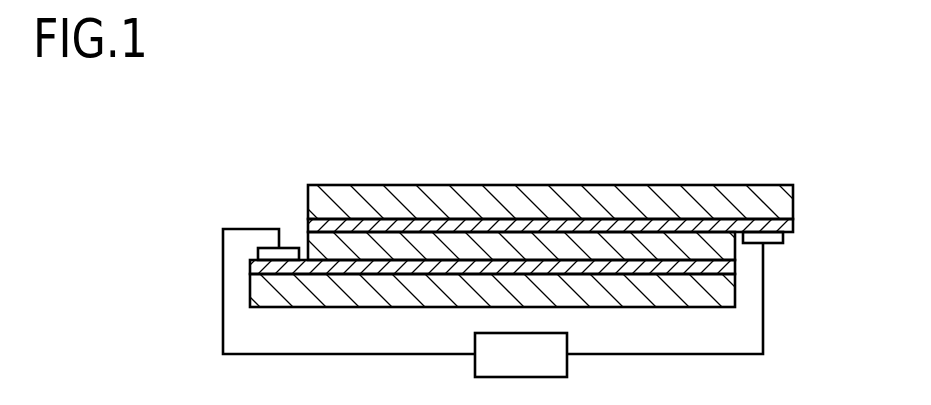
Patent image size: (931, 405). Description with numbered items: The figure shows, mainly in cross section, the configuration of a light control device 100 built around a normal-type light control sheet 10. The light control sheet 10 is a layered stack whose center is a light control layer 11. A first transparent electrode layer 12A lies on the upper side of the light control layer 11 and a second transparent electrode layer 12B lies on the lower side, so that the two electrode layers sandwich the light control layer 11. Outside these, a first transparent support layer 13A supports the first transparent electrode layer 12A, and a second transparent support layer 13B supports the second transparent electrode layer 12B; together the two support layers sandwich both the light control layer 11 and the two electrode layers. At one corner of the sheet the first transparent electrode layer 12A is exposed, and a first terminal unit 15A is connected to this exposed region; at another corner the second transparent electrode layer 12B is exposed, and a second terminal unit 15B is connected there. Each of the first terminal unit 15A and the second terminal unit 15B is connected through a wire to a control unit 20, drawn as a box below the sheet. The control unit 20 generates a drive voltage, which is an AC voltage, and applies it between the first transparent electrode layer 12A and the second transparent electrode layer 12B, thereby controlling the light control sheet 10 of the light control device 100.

The light control device 100 is at (275, 158).
The light control sheet 10 is at (725, 172).
The light control layer 11 is at (310, 245).
The first transparent electrode layer 12A is at (794, 224).
The second transparent electrode layer 12B is at (258, 267).
The first transparent support layer 13A is at (795, 198).
The second transparent support layer 13B is at (258, 296).
The first terminal unit 15A is at (786, 239).
The second terminal unit 15B is at (265, 248).
The control unit 20 is at (568, 366).